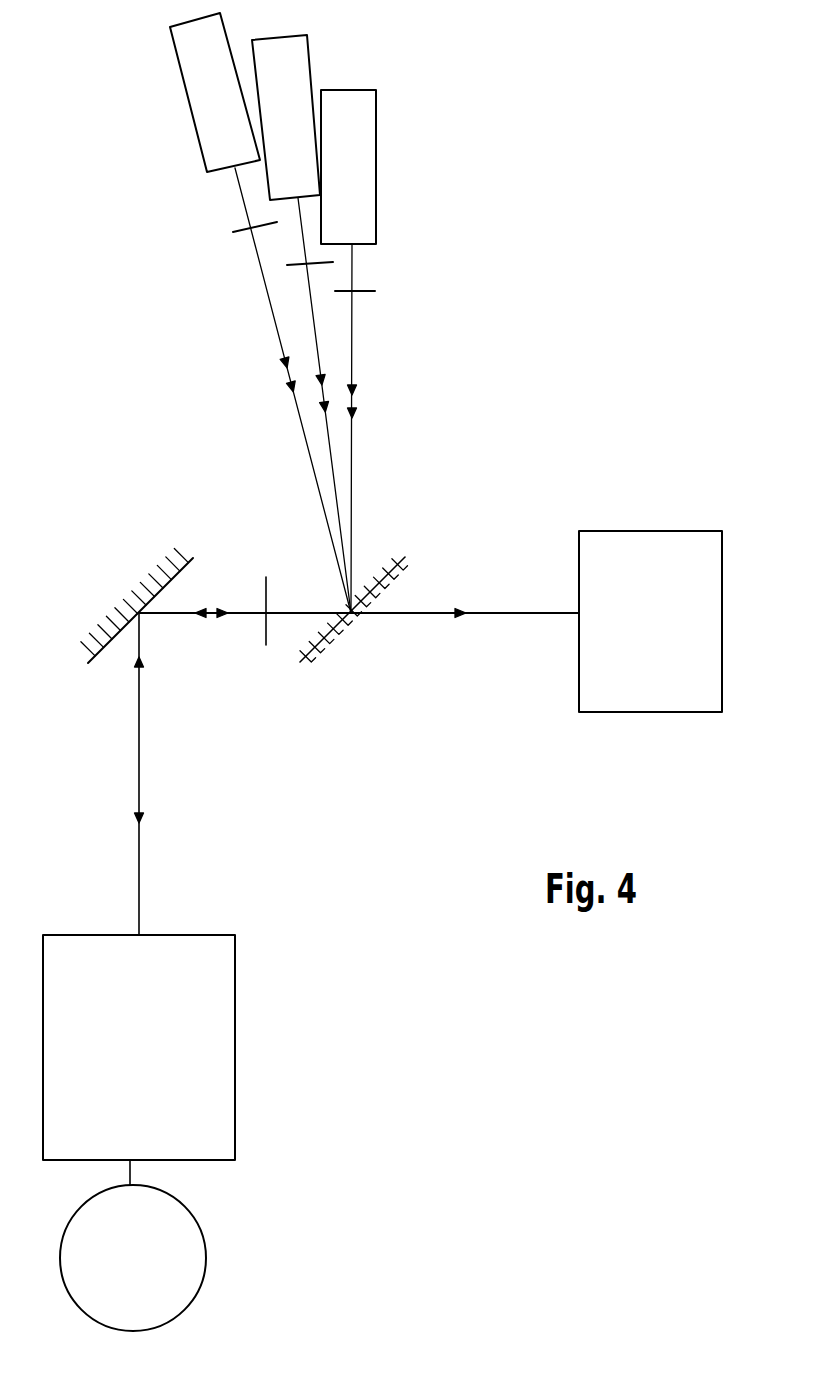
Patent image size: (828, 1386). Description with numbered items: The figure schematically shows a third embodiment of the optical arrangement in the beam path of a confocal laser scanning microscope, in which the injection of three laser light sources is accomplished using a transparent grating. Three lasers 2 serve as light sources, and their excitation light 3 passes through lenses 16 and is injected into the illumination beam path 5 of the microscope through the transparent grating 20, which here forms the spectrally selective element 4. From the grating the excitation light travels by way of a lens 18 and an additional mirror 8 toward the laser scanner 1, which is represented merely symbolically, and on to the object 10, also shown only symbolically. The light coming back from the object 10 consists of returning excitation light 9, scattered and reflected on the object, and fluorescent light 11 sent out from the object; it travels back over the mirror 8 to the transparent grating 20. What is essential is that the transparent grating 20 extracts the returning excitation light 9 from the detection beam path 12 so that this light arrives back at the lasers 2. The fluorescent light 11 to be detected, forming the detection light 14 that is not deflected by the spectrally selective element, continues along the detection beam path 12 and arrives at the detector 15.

The laser scanner 1 is at (236, 1092).
The lasers 2 is at (307, 72).
The excitation light 3 is at (277, 315).
The spectrally selective element 4 is at (327, 640).
The illumination beam path 5 is at (138, 738).
The mirror 8 is at (152, 582).
The returning excitation light 9 is at (243, 772).
The object 10 is at (133, 1245).
The fluorescent light 11 is at (160, 613).
The detection beam path 12 is at (533, 610).
The detection light 14 is at (432, 610).
The detector 15 is at (653, 714).
The lens 16 is at (233, 233).
The lens 18 is at (267, 587).
The transparent grating 20 is at (368, 652).